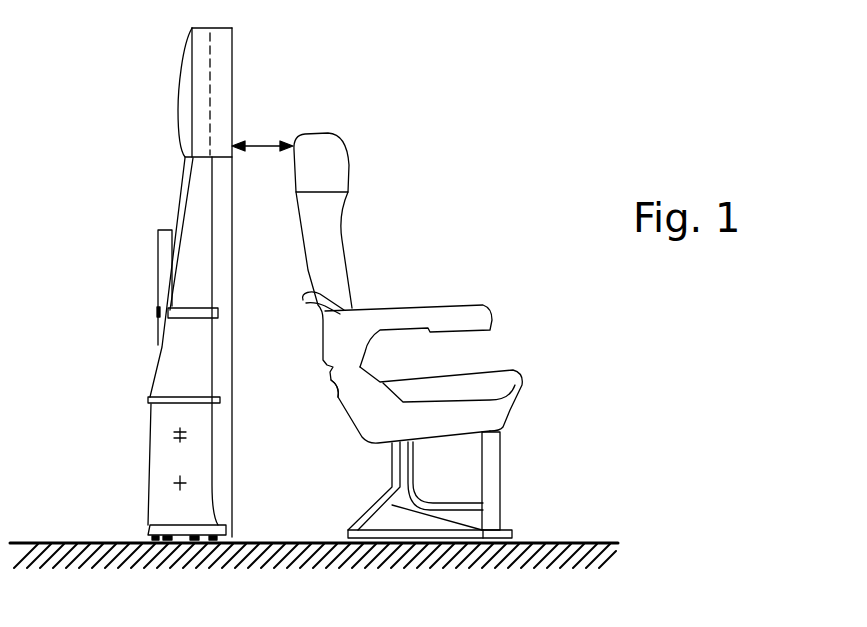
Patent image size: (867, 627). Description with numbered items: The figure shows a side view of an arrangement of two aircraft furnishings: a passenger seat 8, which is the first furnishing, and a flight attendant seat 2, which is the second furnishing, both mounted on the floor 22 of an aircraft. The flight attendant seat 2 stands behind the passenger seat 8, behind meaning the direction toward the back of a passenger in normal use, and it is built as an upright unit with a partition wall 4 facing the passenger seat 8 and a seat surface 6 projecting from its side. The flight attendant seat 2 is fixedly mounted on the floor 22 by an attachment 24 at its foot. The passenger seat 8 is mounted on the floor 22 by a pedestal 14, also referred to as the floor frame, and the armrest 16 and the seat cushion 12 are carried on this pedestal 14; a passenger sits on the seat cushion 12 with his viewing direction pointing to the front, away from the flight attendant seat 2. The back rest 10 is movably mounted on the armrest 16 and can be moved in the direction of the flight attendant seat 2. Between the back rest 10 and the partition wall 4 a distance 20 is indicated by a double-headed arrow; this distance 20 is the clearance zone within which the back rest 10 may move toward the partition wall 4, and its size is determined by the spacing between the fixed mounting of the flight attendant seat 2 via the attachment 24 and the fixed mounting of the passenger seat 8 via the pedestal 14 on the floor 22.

The flight attendant seat 2 is at (247, 35).
The partition wall 4 is at (222, 72).
The seat surface 6 is at (160, 264).
The passenger seat 8 is at (503, 147).
The back rest 10 is at (330, 238).
The seat cushion 12 is at (513, 375).
The pedestal 14 is at (370, 510).
The armrest 16 is at (483, 308).
The distance 20 is at (265, 150).
The floor 22 is at (563, 545).
The attachment 24 is at (150, 525).